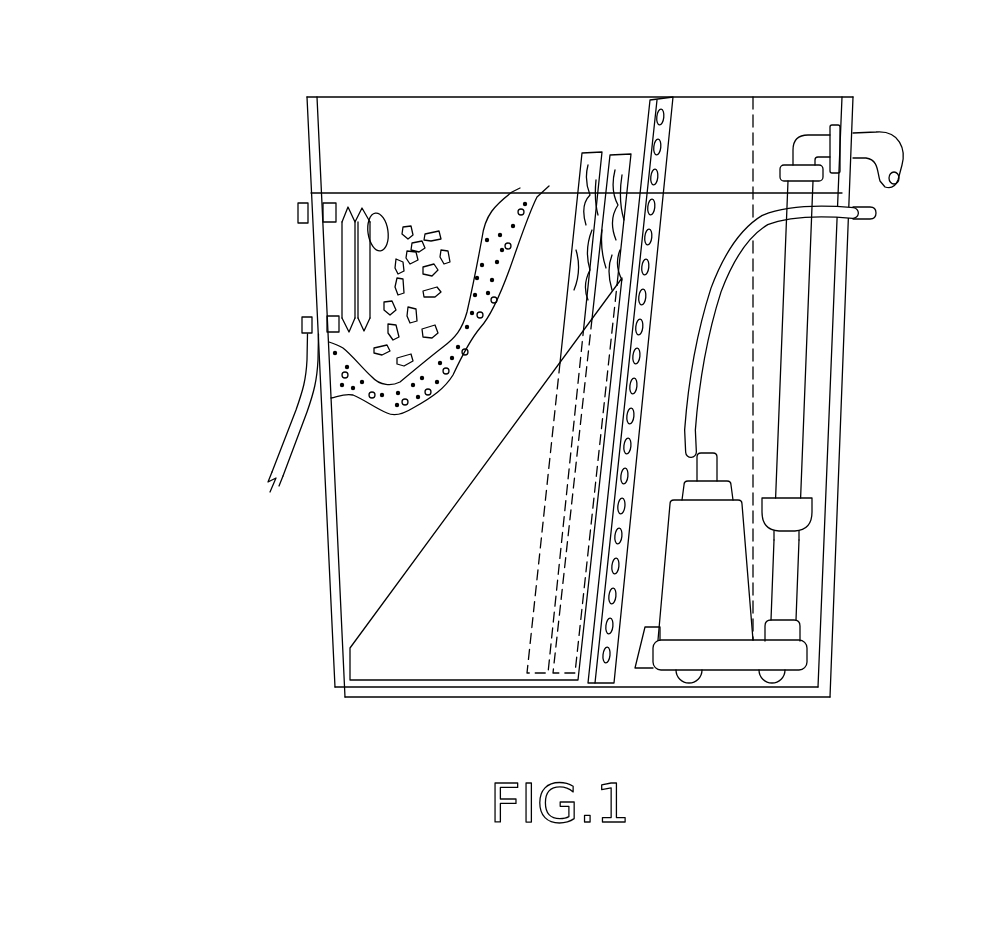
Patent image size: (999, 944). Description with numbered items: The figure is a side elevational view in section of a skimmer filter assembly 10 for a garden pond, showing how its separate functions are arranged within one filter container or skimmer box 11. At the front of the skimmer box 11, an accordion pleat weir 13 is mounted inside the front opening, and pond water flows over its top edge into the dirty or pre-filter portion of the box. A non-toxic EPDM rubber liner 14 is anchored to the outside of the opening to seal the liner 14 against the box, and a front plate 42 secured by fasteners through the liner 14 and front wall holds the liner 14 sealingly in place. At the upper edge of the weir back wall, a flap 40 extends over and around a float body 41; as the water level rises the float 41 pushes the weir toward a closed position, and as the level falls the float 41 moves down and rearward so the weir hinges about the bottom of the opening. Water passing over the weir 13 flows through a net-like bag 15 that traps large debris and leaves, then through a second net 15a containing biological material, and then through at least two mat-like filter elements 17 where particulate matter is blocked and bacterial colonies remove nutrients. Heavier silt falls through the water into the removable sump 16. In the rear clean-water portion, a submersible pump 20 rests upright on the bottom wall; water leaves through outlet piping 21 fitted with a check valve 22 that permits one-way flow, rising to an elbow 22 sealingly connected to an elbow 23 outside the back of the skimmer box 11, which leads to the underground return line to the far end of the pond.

The skimmer filter assembly 10 is at (224, 129).
The skimmer box 11 is at (863, 328).
The accordion pleat weir 13 is at (366, 195).
The EPDM rubber liner 14 is at (275, 413).
The net-like bag 15 is at (518, 190).
The second net 15a is at (547, 190).
The removable sump 16 is at (388, 558).
The mat-like filter elements 17 is at (588, 153).
The submersible pump 20 is at (764, 569).
The outlet piping 21 is at (808, 432).
The check valve 22 is at (810, 135).
The elbow 23 is at (900, 138).
The flap 40 is at (380, 214).
The float body 41 is at (423, 207).
The front plate 42 is at (298, 212).